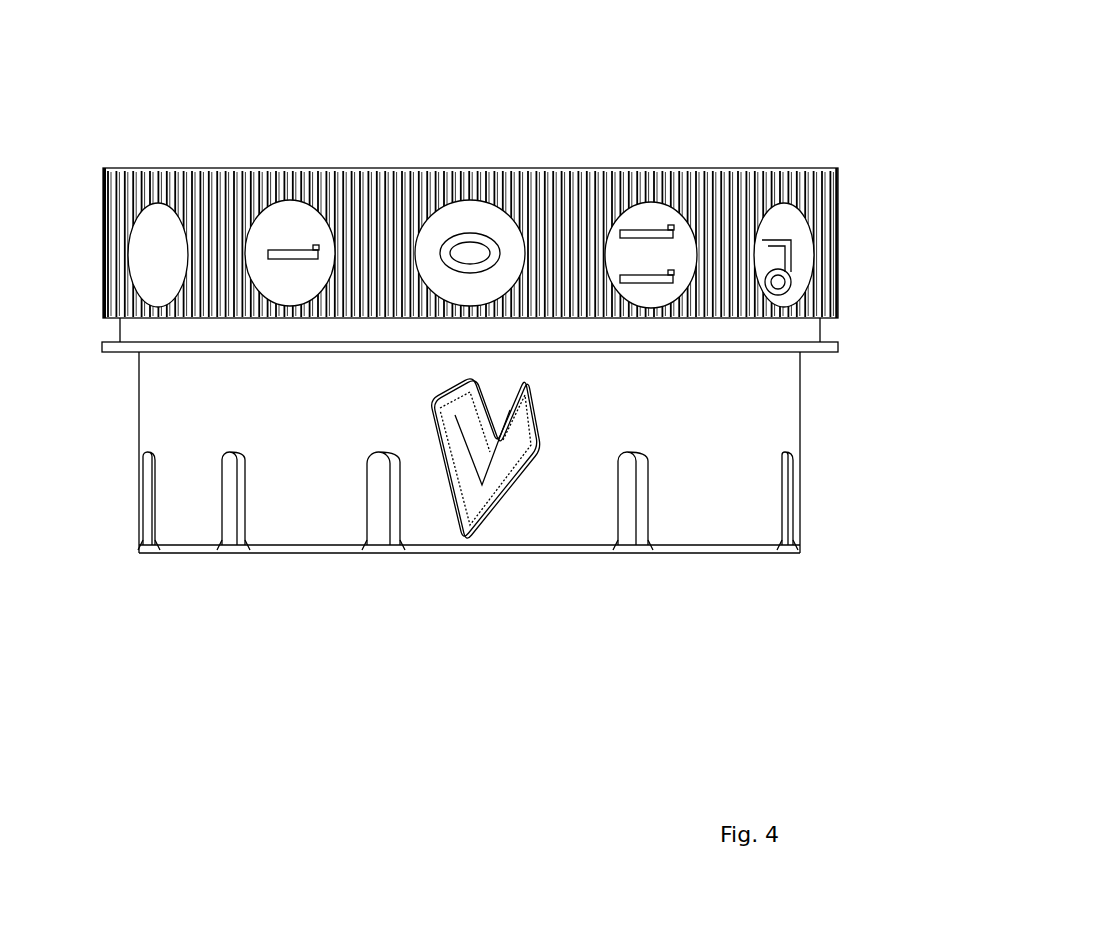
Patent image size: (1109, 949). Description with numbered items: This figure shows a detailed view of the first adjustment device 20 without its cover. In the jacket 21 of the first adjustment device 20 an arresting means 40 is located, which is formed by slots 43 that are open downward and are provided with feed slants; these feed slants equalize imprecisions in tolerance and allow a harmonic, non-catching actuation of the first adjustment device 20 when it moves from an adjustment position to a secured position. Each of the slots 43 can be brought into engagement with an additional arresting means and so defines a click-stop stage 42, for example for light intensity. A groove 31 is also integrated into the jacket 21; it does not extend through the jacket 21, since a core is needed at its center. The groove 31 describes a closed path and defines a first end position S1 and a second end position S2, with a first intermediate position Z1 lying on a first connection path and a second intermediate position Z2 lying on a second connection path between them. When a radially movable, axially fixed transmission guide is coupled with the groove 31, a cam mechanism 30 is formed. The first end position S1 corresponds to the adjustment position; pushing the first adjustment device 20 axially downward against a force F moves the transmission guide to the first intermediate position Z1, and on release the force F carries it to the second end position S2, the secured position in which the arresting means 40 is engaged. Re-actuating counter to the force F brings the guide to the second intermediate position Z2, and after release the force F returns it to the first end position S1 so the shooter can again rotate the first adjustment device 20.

The first adjustment device 20 is at (457, 413).
The jacket 21 is at (470, 323).
The cam mechanism 30 is at (540, 594).
The groove 31 is at (385, 601).
The arresting means 40 is at (464, 600).
The click-stop stage 42 is at (437, 583).
The slots 43 is at (457, 531).
The first intermediate position Z1 is at (594, 558).
The second intermediate position Z2 is at (642, 535).
The first end position S1 is at (511, 628).
The second end position S2 is at (544, 554).
The force F is at (484, 128).